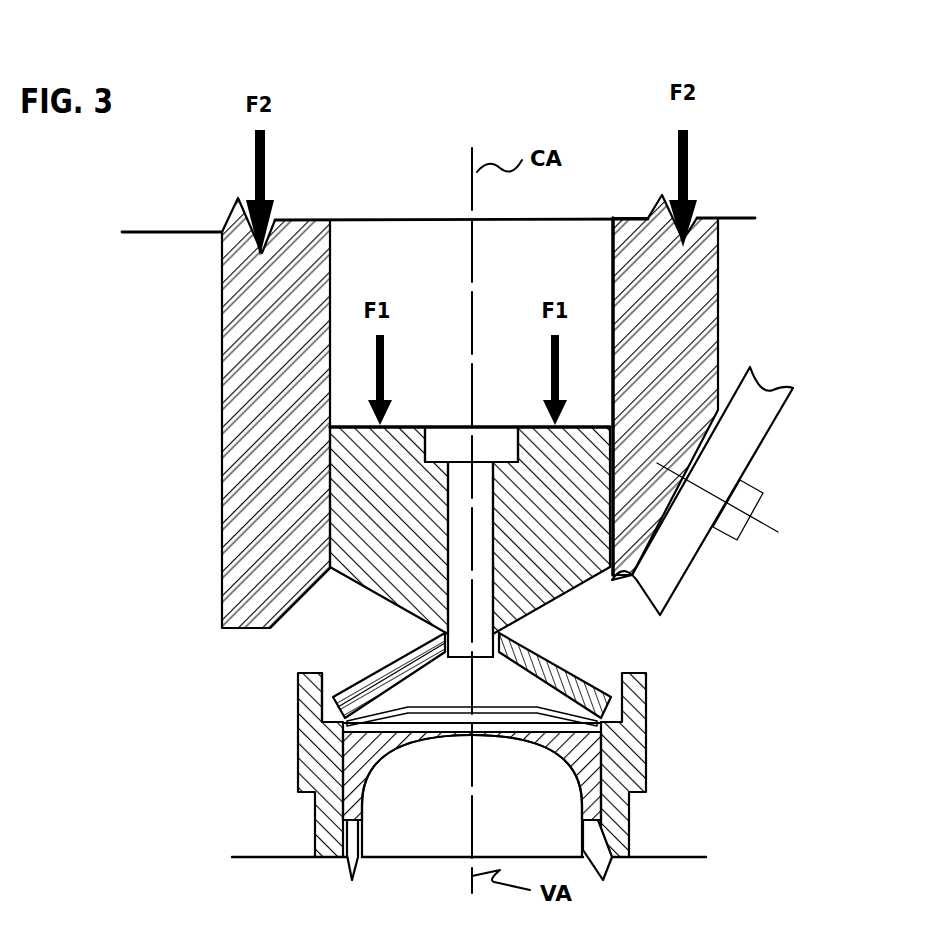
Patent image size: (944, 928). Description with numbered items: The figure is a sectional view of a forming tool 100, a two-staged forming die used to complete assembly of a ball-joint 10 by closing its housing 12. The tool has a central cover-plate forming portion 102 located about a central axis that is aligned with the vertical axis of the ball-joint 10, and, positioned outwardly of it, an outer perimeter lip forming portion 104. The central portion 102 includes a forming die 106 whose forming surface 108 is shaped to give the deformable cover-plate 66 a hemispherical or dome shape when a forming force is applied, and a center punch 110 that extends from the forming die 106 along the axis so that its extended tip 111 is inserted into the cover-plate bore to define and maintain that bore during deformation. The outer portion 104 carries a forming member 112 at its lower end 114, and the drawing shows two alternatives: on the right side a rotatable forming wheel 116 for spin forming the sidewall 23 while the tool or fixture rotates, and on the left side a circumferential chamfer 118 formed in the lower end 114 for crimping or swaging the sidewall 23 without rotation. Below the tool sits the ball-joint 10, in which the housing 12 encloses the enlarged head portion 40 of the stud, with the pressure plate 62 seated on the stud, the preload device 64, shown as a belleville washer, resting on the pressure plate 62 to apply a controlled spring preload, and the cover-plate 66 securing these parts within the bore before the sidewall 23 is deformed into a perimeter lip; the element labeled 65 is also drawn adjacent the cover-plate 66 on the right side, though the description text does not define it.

The ball-joint 10 is at (782, 608).
The housing 12 is at (280, 772).
The sidewall 23 is at (610, 708).
The head portion 40 is at (590, 830).
The pressure plate 62 is at (600, 777).
The preload device 64 is at (356, 708).
The seat element 65 is at (642, 682).
The cover-plate 66 is at (575, 663).
The forming tool 100 is at (797, 133).
The central cover-plate forming portion 102 is at (575, 420).
The outer perimeter lip forming portion 104 is at (723, 318).
The forming die 106 is at (330, 430).
The forming surface 108 is at (290, 610).
The center punch 110 is at (305, 530).
The extended tip 111 is at (483, 640).
The forming member 112 is at (767, 432).
The lower end 114 is at (633, 522).
The rotatable forming wheel 116 is at (672, 542).
The circumferential chamfer 118 is at (437, 637).